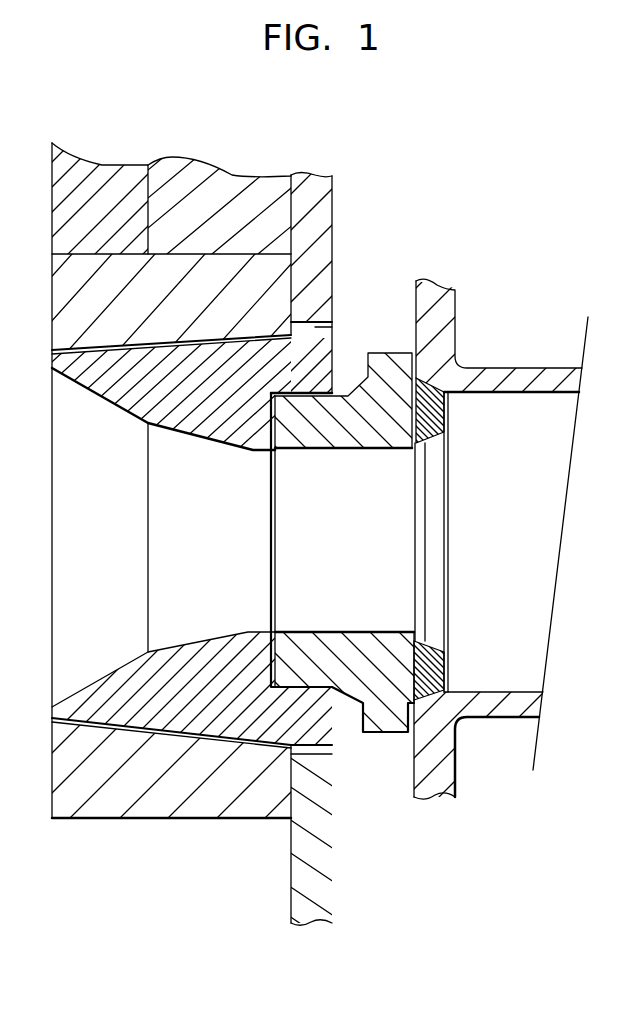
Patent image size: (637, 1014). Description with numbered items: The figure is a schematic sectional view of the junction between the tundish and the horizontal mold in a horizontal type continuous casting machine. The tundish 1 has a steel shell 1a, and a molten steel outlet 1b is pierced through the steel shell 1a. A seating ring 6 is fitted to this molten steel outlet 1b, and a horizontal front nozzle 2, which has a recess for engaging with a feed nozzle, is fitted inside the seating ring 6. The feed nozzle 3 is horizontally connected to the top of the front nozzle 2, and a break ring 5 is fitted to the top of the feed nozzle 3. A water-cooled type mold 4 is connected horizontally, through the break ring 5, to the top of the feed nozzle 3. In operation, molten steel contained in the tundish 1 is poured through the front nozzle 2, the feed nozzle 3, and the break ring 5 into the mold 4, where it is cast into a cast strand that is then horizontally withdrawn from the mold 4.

The tundish 1 is at (265, 170).
The steel shell 1a is at (318, 214).
The molten steel outlet 1b is at (318, 324).
The front nozzle 2 is at (325, 342).
The feed nozzle 3 is at (397, 357).
The mold 4 is at (521, 372).
The break ring 5 is at (427, 386).
The seating ring 6 is at (67, 310).